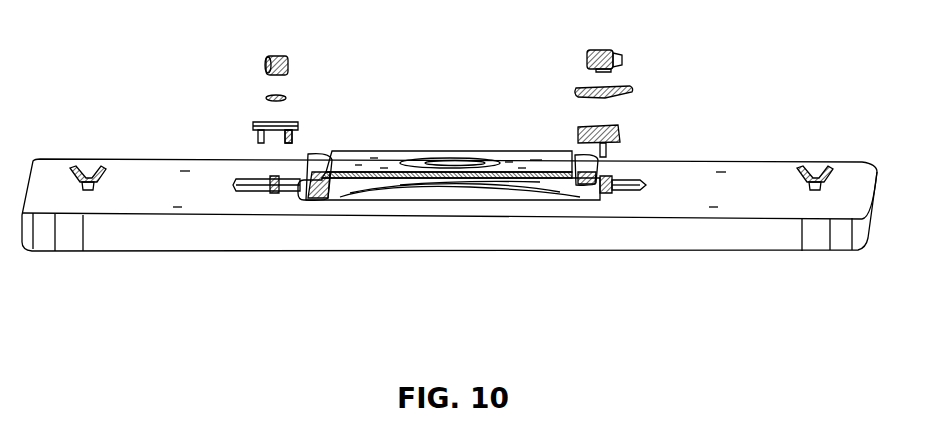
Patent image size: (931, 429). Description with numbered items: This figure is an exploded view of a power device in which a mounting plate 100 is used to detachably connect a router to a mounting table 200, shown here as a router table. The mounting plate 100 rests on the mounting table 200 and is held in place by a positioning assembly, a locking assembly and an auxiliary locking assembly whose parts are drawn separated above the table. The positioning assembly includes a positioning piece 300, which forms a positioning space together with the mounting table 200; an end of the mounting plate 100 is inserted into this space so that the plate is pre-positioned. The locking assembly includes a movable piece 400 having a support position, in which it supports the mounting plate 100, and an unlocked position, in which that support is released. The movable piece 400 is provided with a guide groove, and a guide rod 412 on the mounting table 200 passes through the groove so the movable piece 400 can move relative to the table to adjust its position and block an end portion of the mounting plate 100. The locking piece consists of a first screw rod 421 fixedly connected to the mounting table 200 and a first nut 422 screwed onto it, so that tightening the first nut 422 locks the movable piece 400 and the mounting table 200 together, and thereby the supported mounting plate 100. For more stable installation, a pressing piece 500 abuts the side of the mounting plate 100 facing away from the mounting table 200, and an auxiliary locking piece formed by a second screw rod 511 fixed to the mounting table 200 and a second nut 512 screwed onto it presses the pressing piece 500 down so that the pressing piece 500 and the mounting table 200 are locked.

The mounting plate 100 is at (495, 152).
The mounting table 200 is at (758, 238).
The positioning piece 300 is at (620, 128).
The movable piece 400 is at (252, 124).
The guide rod 412 is at (368, 120).
The first screw rod 421 is at (273, 180).
The first nut 422 is at (265, 62).
The pressing piece 500 is at (632, 90).
The second screw rod 511 is at (615, 182).
The second nut 512 is at (622, 55).